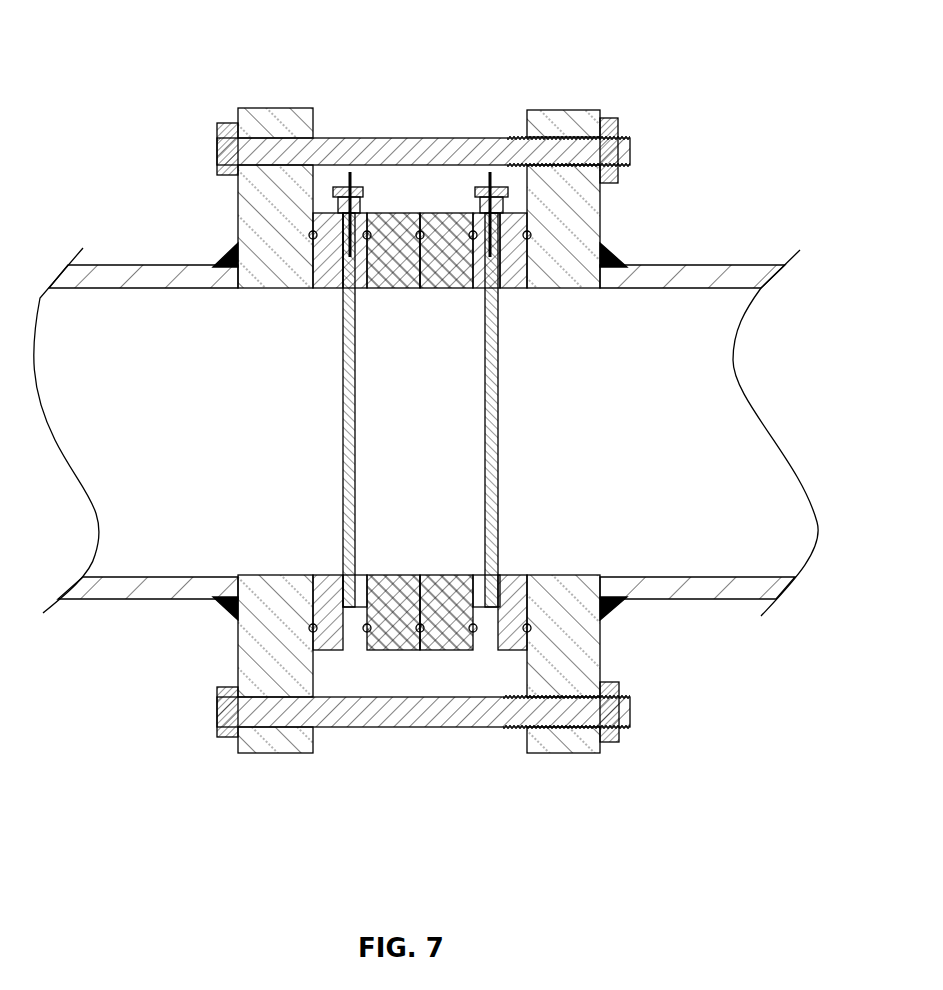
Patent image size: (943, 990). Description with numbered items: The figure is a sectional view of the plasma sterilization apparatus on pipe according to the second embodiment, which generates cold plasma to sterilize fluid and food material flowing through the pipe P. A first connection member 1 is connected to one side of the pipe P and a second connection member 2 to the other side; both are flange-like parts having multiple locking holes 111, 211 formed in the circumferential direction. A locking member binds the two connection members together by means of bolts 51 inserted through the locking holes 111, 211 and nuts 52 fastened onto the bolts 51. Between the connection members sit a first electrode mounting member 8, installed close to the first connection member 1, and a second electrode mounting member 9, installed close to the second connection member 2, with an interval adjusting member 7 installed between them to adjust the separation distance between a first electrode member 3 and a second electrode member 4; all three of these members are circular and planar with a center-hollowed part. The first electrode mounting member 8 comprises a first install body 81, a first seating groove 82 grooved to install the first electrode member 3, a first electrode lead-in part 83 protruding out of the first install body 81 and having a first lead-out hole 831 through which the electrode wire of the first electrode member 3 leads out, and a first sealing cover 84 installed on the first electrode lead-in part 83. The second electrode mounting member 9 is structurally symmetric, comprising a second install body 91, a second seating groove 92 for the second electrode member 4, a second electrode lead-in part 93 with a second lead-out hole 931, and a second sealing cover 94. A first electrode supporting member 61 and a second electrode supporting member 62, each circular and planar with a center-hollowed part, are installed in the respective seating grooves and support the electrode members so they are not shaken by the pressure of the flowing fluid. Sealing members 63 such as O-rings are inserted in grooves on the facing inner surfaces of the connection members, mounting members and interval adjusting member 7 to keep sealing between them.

The first connection member 1 is at (375, 89).
The second connection member 2 is at (613, 93).
The first electrode member 3 is at (341, 412).
The second electrode member 4 is at (502, 412).
The interval adjusting member 7 is at (376, 652).
The first electrode mounting member 8 is at (234, 206).
The second electrode mounting member 9 is at (607, 206).
The bolt 51 is at (220, 740).
The nut 52 is at (612, 745).
The first electrode supporting member 61 is at (323, 652).
The second electrode supporting member 62 is at (512, 652).
The sealing member 63 is at (421, 652).
The first install body 81 is at (320, 222).
The first seating groove 82 is at (338, 237).
The first electrode lead-in part 83 is at (332, 212).
The first sealing cover 84 is at (336, 192).
The second install body 91 is at (515, 220).
The second seating groove 92 is at (500, 238).
The second electrode lead-in part 93 is at (510, 212).
The second sealing cover 94 is at (505, 192).
The locking hole 111 is at (228, 138).
The locking hole 211 is at (620, 140).
The first lead-out hole 831 is at (350, 172).
The second lead-out hole 931 is at (490, 172).
The pipe P is at (73, 630).